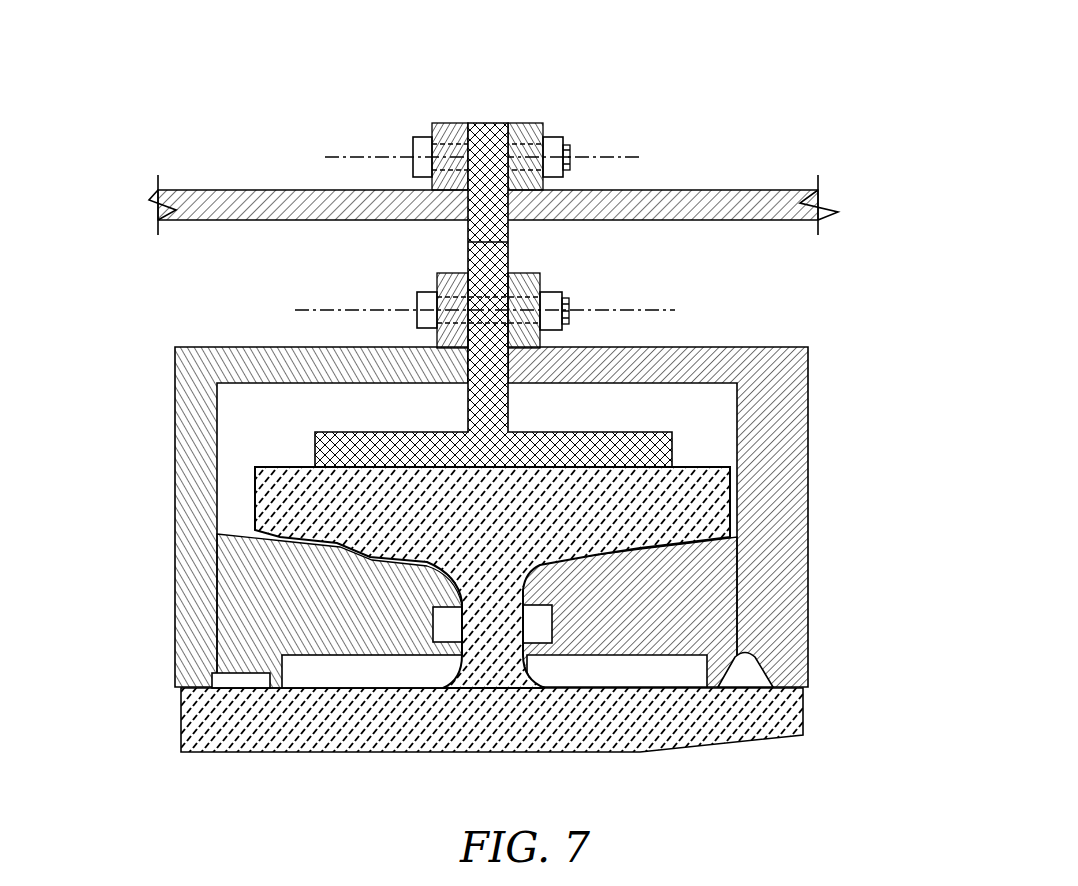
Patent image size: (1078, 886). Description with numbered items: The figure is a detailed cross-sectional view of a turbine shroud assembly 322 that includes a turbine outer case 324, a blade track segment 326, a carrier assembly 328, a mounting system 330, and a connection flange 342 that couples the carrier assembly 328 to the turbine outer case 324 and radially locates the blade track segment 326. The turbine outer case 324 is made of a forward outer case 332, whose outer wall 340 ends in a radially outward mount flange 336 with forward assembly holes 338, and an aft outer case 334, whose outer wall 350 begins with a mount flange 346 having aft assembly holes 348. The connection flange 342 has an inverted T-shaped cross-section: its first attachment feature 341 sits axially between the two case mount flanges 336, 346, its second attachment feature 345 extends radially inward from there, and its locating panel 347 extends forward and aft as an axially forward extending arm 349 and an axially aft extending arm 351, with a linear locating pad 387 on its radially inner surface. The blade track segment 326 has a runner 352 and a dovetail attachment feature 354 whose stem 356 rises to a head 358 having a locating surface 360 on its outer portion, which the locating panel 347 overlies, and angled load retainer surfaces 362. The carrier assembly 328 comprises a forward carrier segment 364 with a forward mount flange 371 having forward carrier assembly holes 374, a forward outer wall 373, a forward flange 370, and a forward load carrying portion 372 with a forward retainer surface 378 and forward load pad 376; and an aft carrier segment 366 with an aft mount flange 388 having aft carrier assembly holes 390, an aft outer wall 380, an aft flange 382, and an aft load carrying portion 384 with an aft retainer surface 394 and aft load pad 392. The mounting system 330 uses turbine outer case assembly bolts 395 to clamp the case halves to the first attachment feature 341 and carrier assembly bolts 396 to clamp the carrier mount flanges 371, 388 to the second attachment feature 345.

The turbine shroud assembly 322 is at (855, 84).
The turbine outer case 324 is at (325, 83).
The blade track segment 326 is at (768, 750).
The carrier assembly 328 is at (781, 325).
The mounting system 330 is at (136, 82).
The forward outer case 332 is at (355, 110).
The aft outer case 334 is at (632, 113).
The mount flange 336 is at (444, 133).
The forward assembly holes 338 is at (454, 162).
The outer wall 340 is at (291, 207).
The first attachment feature 341 is at (462, 230).
The connection flange 342 is at (482, 122).
The second attachment feature 345 is at (497, 272).
The mount flange 346 is at (535, 132).
The locating panel 347 is at (686, 436).
The aft assembly holes 348 is at (525, 164).
The axially forward extending arm 349 is at (345, 450).
The outer wall 350 is at (712, 208).
The axially aft extending arm 351 is at (650, 453).
The runner 352 is at (186, 720).
The dovetail attachment feature 354 is at (489, 632).
The stem 356 is at (450, 657).
The head 358 is at (642, 472).
The locating surface 360 is at (265, 467).
The load retainer surfaces 362 is at (267, 530).
The forward carrier segment 364 is at (170, 350).
The aft carrier segment 366 is at (819, 338).
The forward flange 370 is at (187, 395).
The forward mount flange 371 is at (441, 277).
The forward load carrying portion 372 is at (287, 628).
The forward outer wall 373 is at (212, 352).
The forward carrier assembly holes 374 is at (450, 311).
The forward load pad 376 is at (350, 547).
The forward retainer surface 378 is at (277, 535).
The aft outer wall 380 is at (705, 356).
The aft flange 382 is at (800, 370).
The aft load carrying portion 384 is at (650, 560).
The locating pad 387 is at (652, 497).
The aft mount flange 388 is at (536, 278).
The aft carrier assembly holes 390 is at (523, 309).
The aft load pad 392 is at (688, 635).
The aft retainer surface 394 is at (640, 550).
The turbine outer case assembly bolts 395 is at (458, 110).
The carrier assembly bolts 396 is at (549, 305).